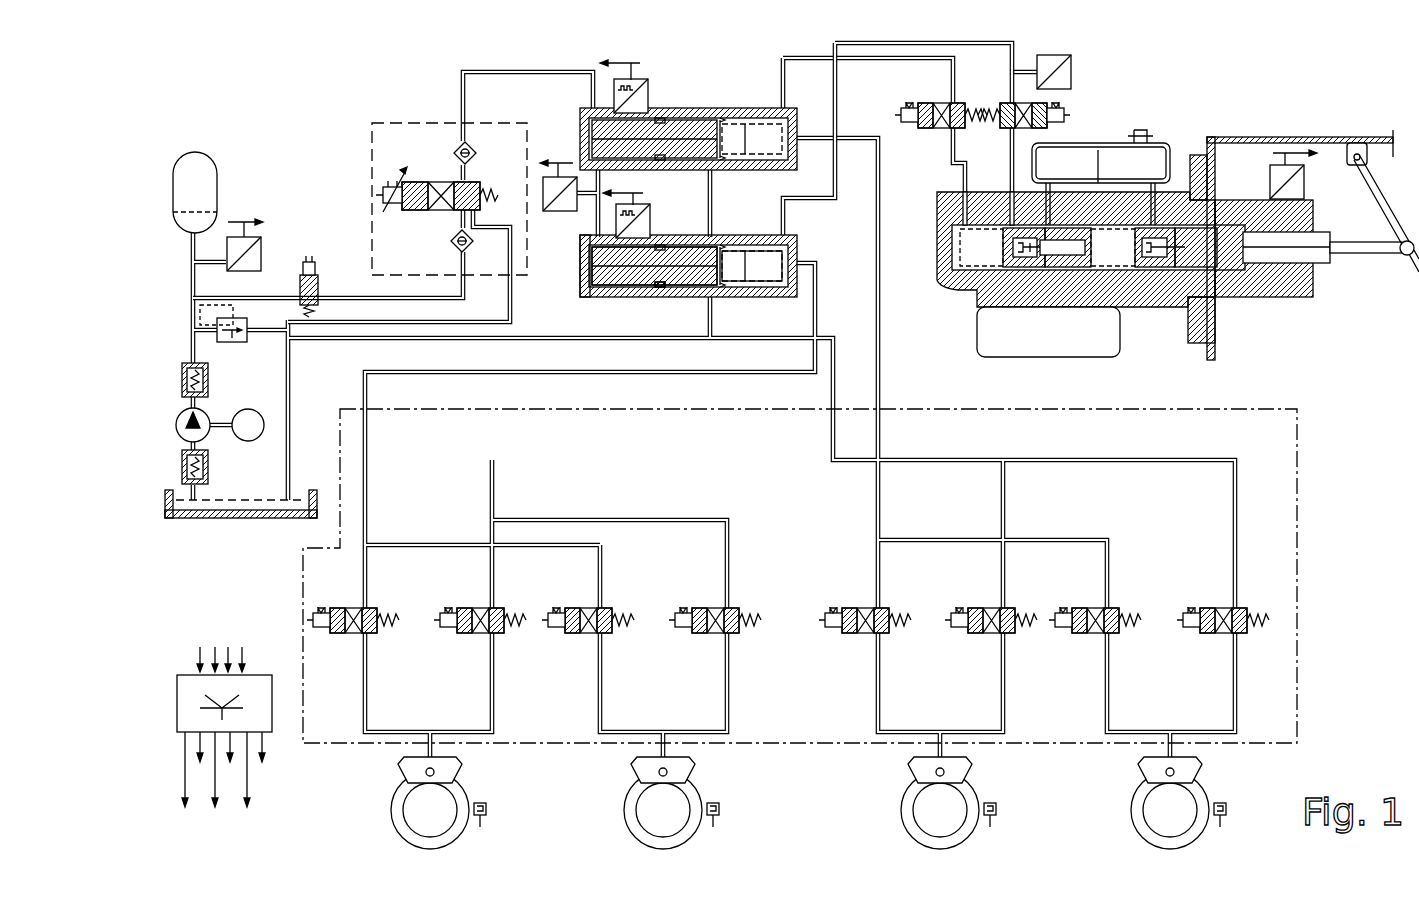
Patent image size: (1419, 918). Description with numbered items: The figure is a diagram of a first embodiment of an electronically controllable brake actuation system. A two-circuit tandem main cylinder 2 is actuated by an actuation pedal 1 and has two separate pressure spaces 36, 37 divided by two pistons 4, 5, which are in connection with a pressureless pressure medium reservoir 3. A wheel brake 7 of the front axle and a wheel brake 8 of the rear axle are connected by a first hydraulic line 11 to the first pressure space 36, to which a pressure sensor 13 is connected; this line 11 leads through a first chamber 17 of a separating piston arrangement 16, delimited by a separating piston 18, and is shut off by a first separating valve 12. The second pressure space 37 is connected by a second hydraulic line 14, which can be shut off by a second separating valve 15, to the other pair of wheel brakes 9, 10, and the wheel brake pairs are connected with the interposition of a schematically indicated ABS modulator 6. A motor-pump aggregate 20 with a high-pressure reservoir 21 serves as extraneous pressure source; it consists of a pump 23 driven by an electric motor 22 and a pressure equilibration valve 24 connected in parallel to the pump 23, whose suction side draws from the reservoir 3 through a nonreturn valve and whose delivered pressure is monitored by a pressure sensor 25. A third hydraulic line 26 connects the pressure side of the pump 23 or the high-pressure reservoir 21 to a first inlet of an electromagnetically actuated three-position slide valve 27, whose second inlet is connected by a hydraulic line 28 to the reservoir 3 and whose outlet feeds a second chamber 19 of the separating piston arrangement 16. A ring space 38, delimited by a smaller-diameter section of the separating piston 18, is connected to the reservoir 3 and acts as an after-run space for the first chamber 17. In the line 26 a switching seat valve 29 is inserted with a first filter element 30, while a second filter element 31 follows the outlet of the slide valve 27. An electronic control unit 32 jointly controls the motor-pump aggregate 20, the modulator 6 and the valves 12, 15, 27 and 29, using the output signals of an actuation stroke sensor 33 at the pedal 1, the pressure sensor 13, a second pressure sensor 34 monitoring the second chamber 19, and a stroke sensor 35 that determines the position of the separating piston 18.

The actuation pedal 1 is at (1387, 210).
The tandem main cylinder 2 is at (1178, 190).
The pressure medium reservoir 3 is at (242, 518).
The piston 4 is at (1200, 273).
The piston 5 is at (1062, 275).
The ABS modulator 6 is at (1265, 406).
The wheel brake 7 is at (445, 773).
The wheel brake 8 is at (678, 773).
The wheel brake 9 is at (955, 773).
The wheel brake 10 is at (1185, 773).
The first hydraulic line 11 is at (838, 108).
The first separating valve 12 is at (1033, 103).
The pressure sensor 13 is at (1072, 72).
The second hydraulic line 14 is at (780, 74).
The second separating valve 15 is at (936, 103).
The separating piston arrangement 16 is at (727, 232).
The first chamber 17 is at (757, 283).
The separating piston 18 is at (658, 266).
The second chamber 19 is at (610, 297).
The motor-pump aggregate 20 is at (229, 411).
The high-pressure reservoir 21 is at (205, 190).
The electric motor 22 is at (258, 436).
The pump 23 is at (187, 418).
The pressure equilibration valve 24 is at (236, 342).
The pressure sensor 25 is at (262, 232).
The third hydraulic line 26 is at (275, 297).
The 3/3-way slide valve 27 is at (383, 120).
The hydraulic line 28 is at (514, 303).
The switching seat valve 29 is at (318, 285).
The first filter element 30 is at (450, 243).
The second filter element 31 is at (478, 150).
The electronic control unit 32 is at (272, 708).
The actuation stroke sensor 33 is at (1305, 183).
The second pressure sensor 34 is at (560, 212).
The stroke sensor 35 is at (652, 222).
The first pressure space 36 is at (1150, 258).
The second pressure space 37 is at (992, 257).
The ring space 38 is at (692, 295).